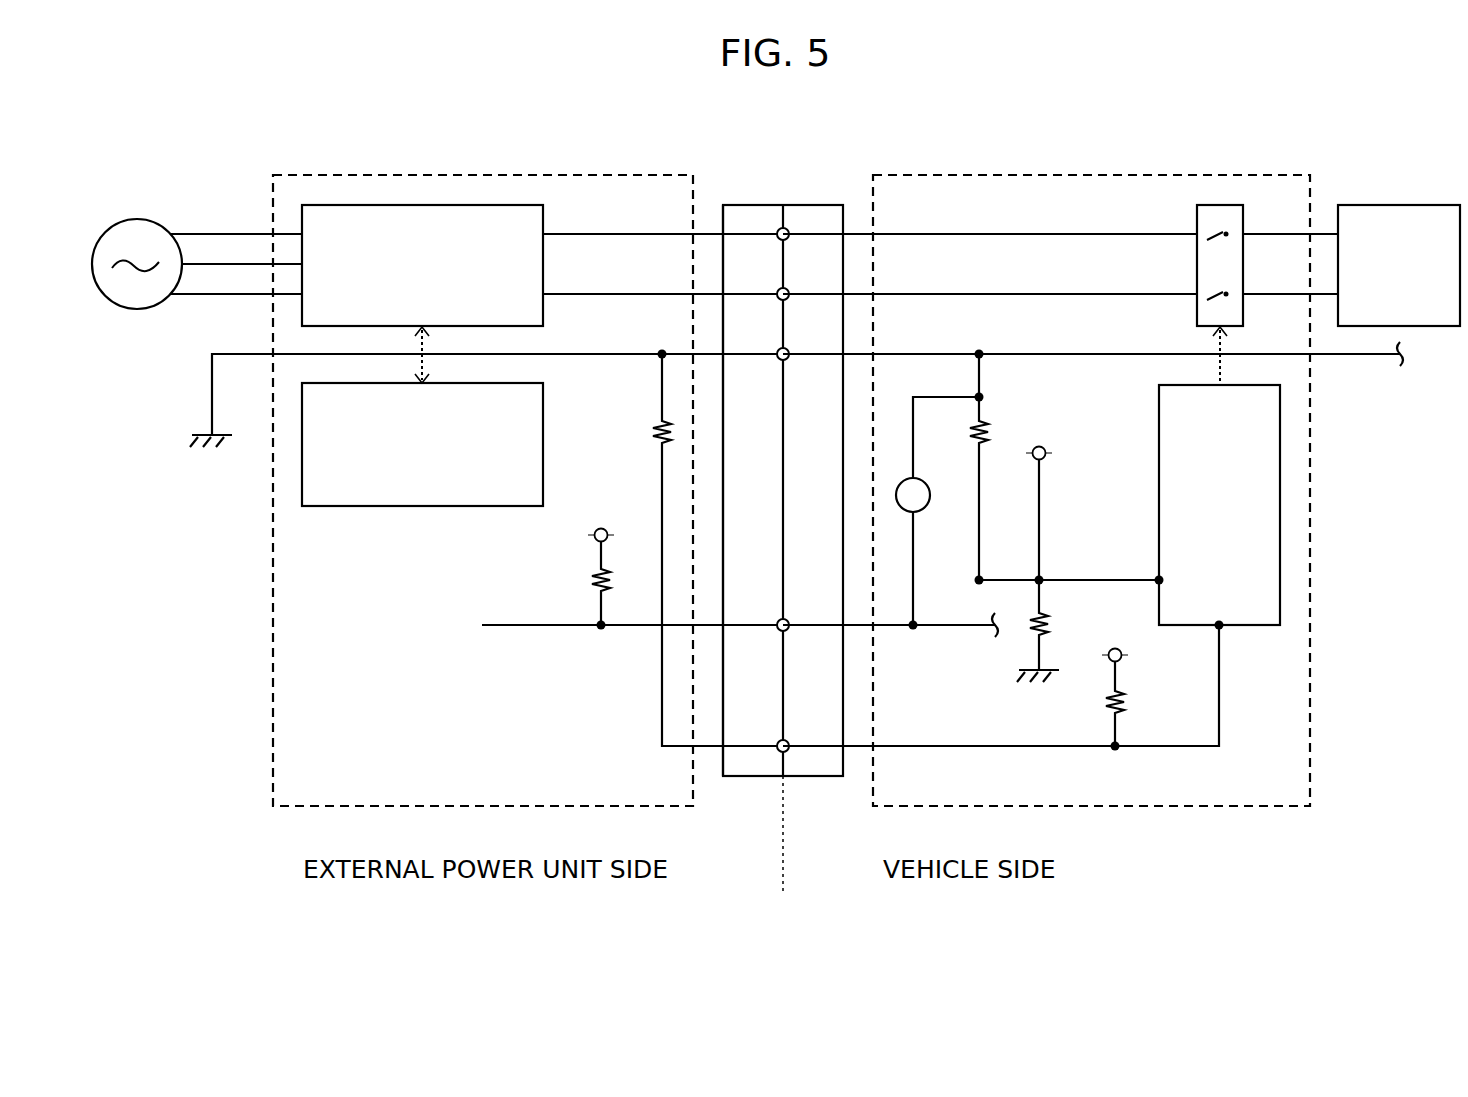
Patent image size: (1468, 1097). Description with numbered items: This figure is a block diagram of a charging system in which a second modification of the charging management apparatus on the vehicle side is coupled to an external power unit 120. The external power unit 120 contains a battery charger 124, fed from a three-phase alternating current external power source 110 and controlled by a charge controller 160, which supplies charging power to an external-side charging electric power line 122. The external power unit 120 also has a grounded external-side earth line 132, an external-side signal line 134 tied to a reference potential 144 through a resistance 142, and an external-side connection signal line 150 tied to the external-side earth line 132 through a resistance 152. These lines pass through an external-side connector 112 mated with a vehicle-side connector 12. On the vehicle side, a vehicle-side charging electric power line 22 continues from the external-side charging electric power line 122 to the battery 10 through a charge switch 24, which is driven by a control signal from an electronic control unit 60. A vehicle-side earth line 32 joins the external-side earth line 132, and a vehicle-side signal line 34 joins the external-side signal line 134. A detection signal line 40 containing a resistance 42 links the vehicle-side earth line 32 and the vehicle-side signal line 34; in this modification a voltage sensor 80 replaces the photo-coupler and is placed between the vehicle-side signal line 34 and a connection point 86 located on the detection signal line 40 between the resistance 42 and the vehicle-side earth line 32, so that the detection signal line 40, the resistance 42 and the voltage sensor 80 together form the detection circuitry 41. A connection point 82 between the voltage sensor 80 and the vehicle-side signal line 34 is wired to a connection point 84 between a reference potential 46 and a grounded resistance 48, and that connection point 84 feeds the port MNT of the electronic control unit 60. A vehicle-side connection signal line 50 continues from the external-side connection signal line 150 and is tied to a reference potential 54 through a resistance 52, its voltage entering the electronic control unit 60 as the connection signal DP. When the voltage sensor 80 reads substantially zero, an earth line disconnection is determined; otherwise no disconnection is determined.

The battery 10 is at (1396, 205).
The vehicle-side connector 12 is at (814, 205).
The vehicle-side charging electric power line 22 is at (1011, 234).
The charge switch 24 is at (1218, 205).
The vehicle-side earth line 32 is at (1050, 354).
The vehicle-side signal line 34 is at (950, 628).
The detection signal line 40 is at (982, 384).
The detection circuitry 41 is at (1071, 403).
The resistance 42 is at (992, 421).
The reference potential 46 is at (1047, 450).
The resistance 48 is at (1049, 614).
The vehicle-side connection signal line 50 is at (998, 745).
The resistance 52 is at (1125, 695).
The reference potential 54 is at (1123, 655).
The electronic control unit 60 is at (1280, 503).
The voltage sensor 80 is at (921, 482).
The connection point 82 is at (975, 578).
The connection point 84 is at (1045, 578).
The connection point 86 is at (975, 393).
The external power source 110 is at (148, 220).
The external-side connector 112 is at (753, 205).
The external power unit 120 is at (483, 176).
The external-side charging electric power line 122 is at (607, 234).
The battery charger 124 is at (428, 205).
The external-side earth line 132 is at (577, 354).
The external-side signal line 134 is at (512, 628).
The resistance 142 is at (594, 572).
The reference potential 144 is at (607, 530).
The external-side connection signal line 150 is at (660, 716).
The resistance 152 is at (654, 423).
The charge controller 160 is at (423, 507).